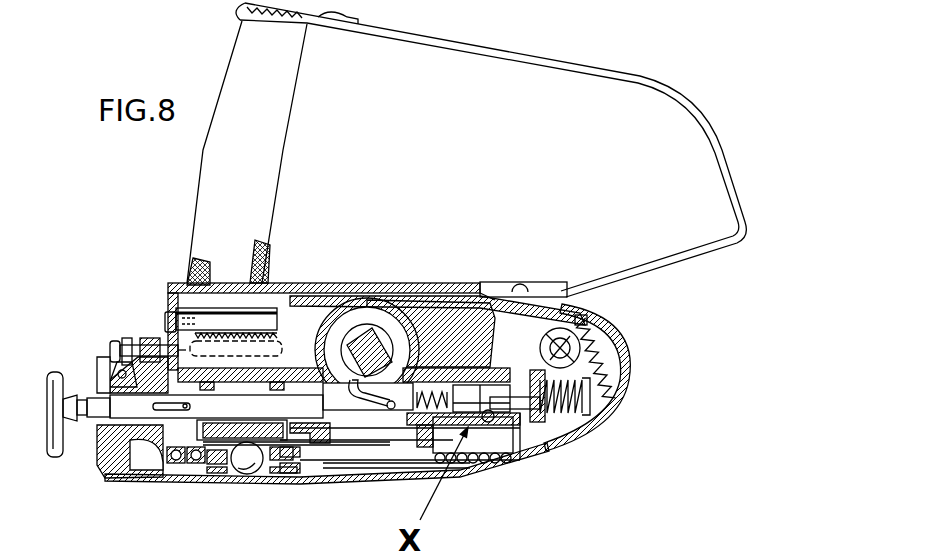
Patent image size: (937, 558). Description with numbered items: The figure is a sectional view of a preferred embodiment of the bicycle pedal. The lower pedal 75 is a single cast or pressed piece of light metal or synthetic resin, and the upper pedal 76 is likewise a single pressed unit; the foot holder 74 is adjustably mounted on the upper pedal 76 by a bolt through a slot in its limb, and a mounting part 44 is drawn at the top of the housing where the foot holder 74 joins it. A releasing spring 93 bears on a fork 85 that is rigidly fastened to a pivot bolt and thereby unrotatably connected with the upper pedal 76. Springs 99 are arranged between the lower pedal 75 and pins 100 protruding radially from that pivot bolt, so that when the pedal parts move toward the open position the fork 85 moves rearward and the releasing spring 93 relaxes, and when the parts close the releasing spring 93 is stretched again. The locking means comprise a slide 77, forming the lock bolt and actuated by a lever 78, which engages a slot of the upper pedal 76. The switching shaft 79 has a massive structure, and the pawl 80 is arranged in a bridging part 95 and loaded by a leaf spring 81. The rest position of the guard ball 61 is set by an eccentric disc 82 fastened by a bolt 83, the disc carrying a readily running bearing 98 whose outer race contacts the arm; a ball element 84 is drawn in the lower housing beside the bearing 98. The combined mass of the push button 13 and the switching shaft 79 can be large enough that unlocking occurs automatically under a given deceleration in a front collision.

The foot holder 74 is at (712, 158).
The upper pedal 76 is at (183, 286).
The pawl 80 is at (323, 290).
The bracket 44 is at (498, 330).
The slide 77 is at (148, 337).
The lever 78 is at (117, 387).
The switching shaft 79 is at (130, 412).
The push button 13 is at (64, 428).
The bolt 83 is at (173, 478).
The eccentric disc 82 is at (186, 476).
The bearing 98 is at (200, 463).
The ball 84 is at (298, 487).
The leaf spring 81 is at (358, 410).
The bridging part 95 is at (398, 413).
The guard ball 61 is at (513, 408).
The releasing spring 93 is at (593, 417).
The fork 85 is at (545, 373).
The pins 100 is at (580, 318).
The springs 99 is at (612, 375).
The lower pedal 75 is at (623, 363).